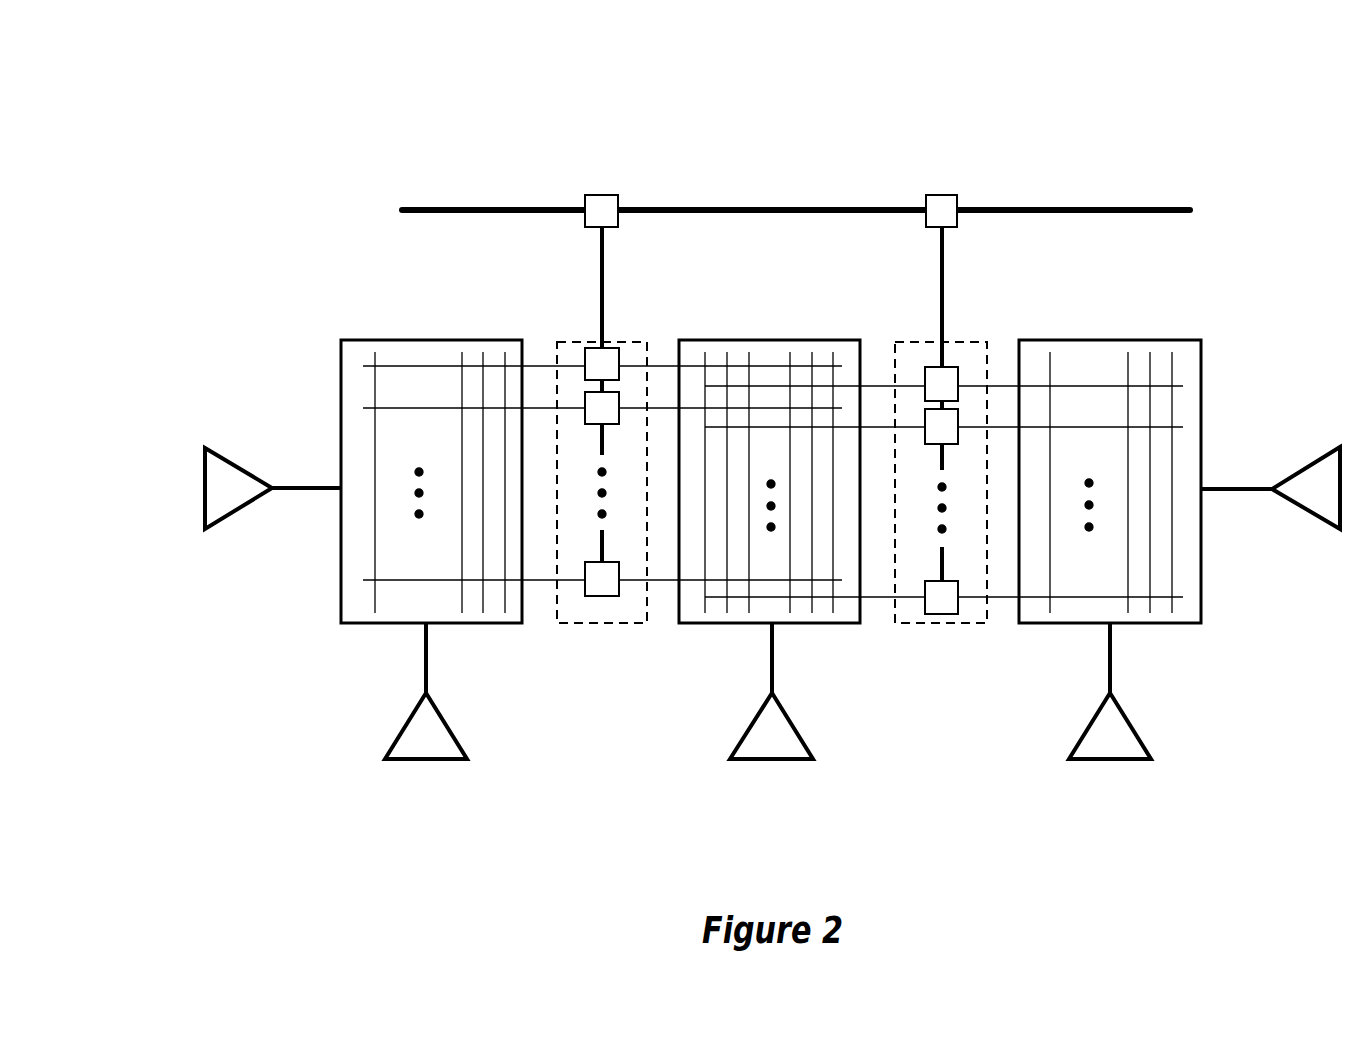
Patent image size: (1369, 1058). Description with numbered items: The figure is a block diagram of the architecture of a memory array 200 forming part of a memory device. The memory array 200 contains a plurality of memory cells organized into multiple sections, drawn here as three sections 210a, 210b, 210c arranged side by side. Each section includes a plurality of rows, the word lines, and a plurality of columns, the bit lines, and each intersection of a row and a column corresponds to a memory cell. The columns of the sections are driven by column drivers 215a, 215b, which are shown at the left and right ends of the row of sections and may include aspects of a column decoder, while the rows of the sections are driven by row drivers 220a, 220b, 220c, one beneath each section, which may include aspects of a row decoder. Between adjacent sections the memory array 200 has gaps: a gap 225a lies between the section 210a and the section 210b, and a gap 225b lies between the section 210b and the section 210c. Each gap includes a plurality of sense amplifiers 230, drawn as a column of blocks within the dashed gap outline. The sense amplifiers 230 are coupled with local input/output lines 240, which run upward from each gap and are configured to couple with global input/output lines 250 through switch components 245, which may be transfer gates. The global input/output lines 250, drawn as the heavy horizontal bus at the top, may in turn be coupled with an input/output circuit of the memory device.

The memory array 200 is at (214, 122).
The section 210a is at (433, 340).
The section 210b is at (773, 340).
The section 210c is at (1113, 340).
The column driver 215a is at (240, 462).
The column driver 215b is at (1305, 465).
The row driver 220a is at (403, 728).
The row driver 220b is at (748, 725).
The row driver 220c is at (1088, 725).
The gap 225a is at (575, 340).
The gap 225b is at (920, 340).
The sense amplifier 230 is at (603, 597).
The local input/output line 240 is at (605, 280).
The switch component 245 is at (598, 195).
The global input/output line 250 is at (773, 207).